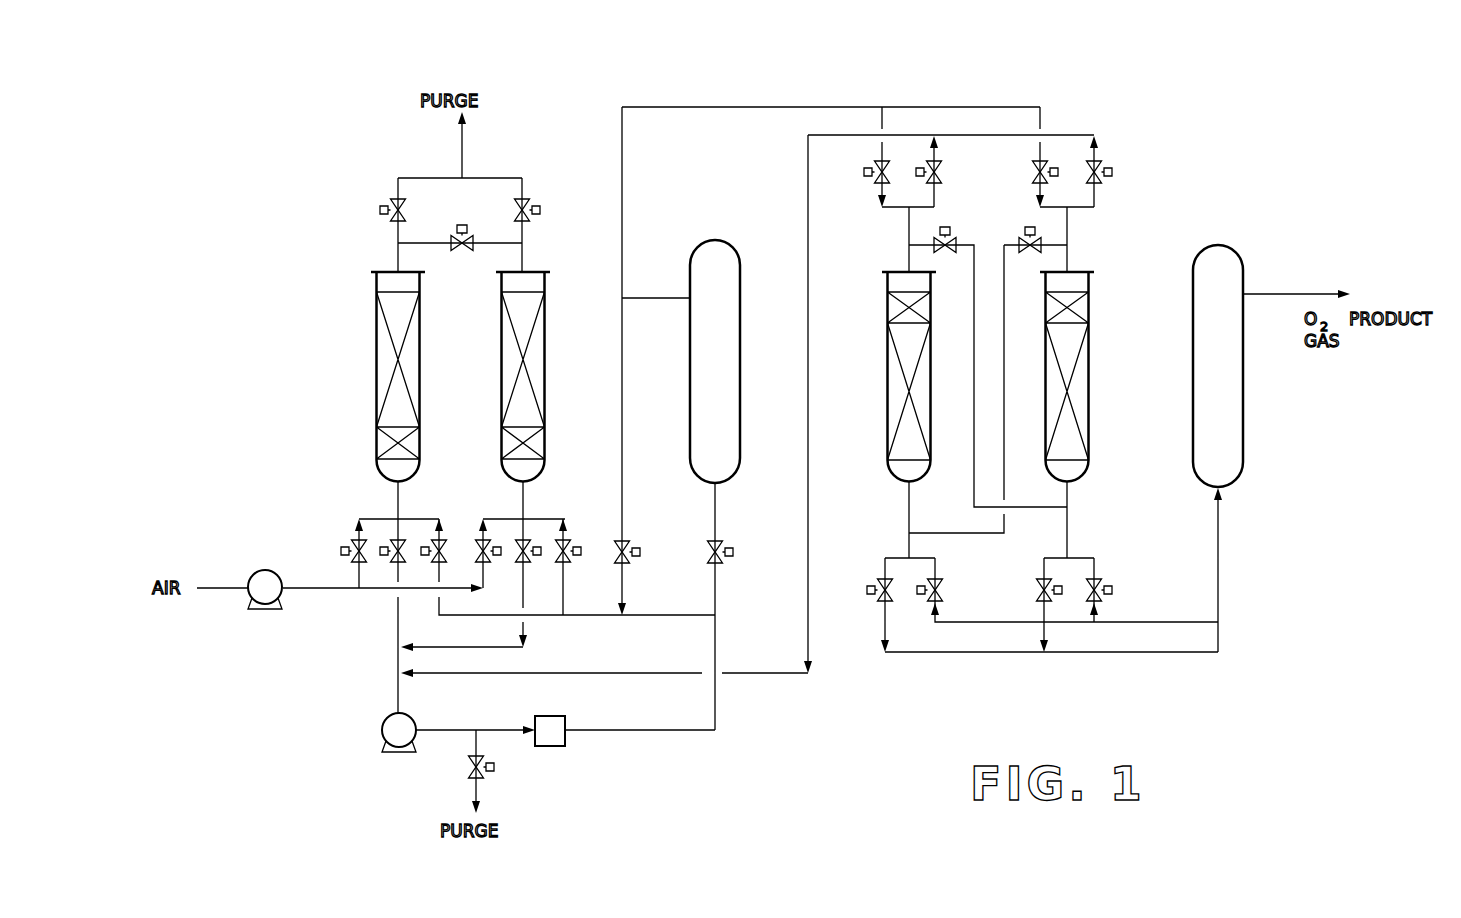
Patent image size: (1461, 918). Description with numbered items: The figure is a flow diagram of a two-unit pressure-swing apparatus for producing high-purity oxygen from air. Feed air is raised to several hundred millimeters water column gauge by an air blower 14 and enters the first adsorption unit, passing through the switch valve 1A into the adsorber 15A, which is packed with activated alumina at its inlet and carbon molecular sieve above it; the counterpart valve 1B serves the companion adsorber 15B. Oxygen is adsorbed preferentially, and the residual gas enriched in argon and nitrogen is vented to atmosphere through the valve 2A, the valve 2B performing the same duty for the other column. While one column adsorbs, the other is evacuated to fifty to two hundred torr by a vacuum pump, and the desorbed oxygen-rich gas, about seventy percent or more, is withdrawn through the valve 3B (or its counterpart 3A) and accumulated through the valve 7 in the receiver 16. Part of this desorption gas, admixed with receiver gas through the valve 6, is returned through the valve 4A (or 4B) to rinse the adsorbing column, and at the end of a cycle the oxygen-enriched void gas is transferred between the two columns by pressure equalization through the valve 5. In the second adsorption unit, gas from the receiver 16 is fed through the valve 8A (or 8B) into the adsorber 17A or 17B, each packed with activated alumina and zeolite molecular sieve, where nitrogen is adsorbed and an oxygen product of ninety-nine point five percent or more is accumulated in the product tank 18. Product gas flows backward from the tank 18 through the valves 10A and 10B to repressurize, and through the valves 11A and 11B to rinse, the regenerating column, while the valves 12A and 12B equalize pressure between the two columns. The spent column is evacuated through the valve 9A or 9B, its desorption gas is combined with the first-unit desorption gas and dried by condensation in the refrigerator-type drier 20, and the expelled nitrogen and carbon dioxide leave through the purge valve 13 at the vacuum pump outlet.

The switch valve 1A is at (347, 540).
The feed valve B 1B is at (478, 540).
The switch valve 2A is at (379, 201).
The purge valve B 2B is at (539, 201).
The evacuation valve A 3A is at (387, 540).
The switch valve 3B is at (517, 540).
The switch valve 4A is at (426, 540).
The repressurization valve B 4B is at (555, 540).
The switch valve 5 is at (462, 227).
The valve 6 is at (632, 543).
The valve 7 is at (723, 543).
The switch valve 8A is at (864, 163).
The second stage feed valve B 8B is at (1053, 163).
The second stage vent valve A 9A is at (919, 163).
The switch valve 9B is at (1110, 163).
The switch valve 10A is at (868, 582).
The second stage purge valve B 10B is at (1031, 582).
The second stage product valve A 11A is at (921, 582).
The switch valve 11B is at (1114, 582).
The switch valve 12A is at (952, 229).
The equalization valve B 12B is at (1019, 229).
The purge valve 13 is at (469, 767).
The air blower 14 is at (265, 603).
The adsorber 15A is at (369, 377).
The adsorber 15B is at (500, 377).
The receiver 16 is at (701, 361).
The adsorber 17A is at (890, 377).
The adsorber 17B is at (1086, 377).
The product tank 18 is at (812, 512).
The refrigerator-type drier 20 is at (550, 746).